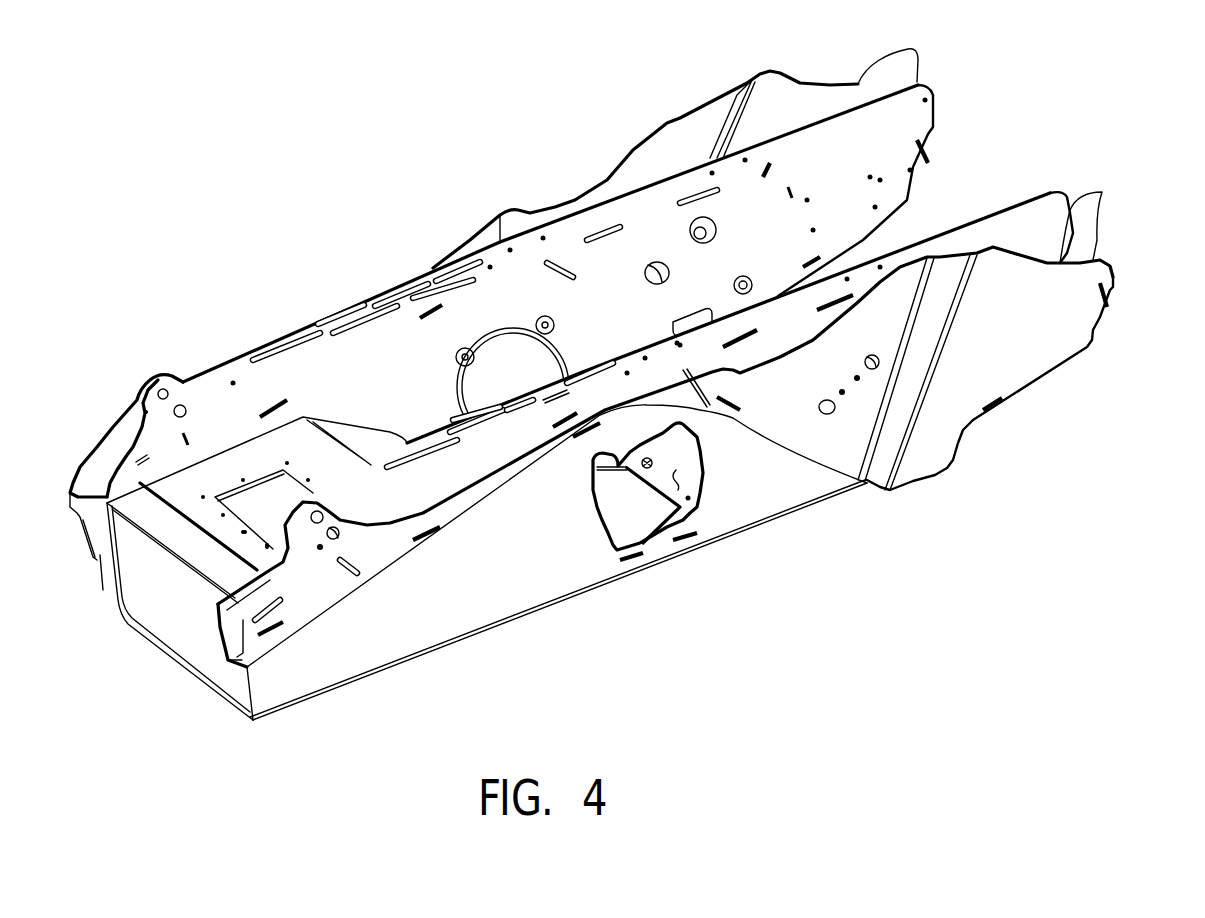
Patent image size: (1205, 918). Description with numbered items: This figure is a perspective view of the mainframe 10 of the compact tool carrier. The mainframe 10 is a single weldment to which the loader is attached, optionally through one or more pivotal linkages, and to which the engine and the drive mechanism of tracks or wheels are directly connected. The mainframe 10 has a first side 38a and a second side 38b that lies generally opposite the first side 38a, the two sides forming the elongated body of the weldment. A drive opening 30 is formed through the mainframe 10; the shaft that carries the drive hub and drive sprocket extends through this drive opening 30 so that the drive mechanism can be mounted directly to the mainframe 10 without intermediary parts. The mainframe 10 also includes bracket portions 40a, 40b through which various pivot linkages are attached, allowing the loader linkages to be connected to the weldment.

The mainframe 10 is at (199, 261).
The drive opening 30 is at (683, 473).
The first side 38a is at (420, 623).
The second side 38b is at (340, 358).
The bracket portion 40a is at (1102, 192).
The bracket portion 40b is at (918, 48).